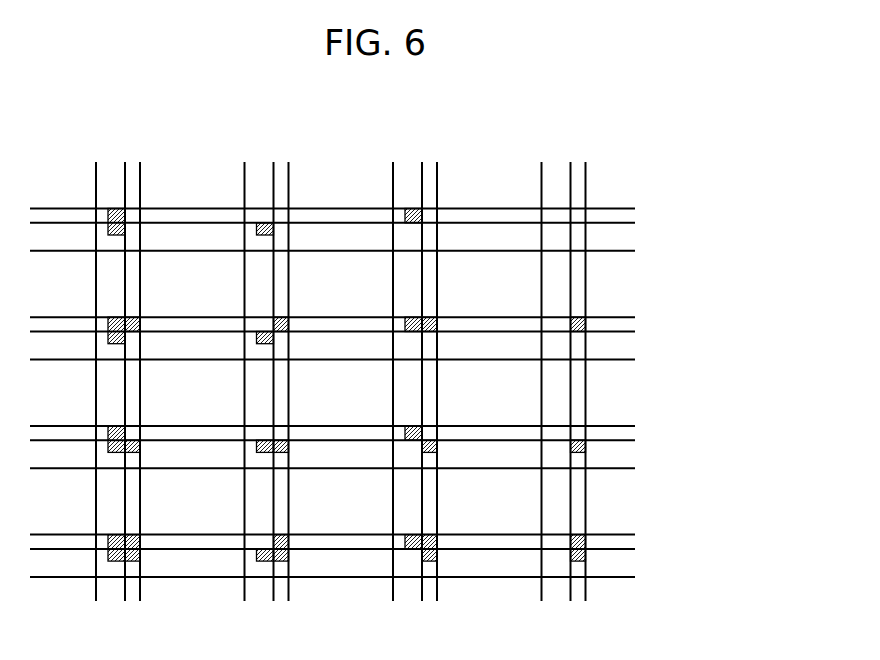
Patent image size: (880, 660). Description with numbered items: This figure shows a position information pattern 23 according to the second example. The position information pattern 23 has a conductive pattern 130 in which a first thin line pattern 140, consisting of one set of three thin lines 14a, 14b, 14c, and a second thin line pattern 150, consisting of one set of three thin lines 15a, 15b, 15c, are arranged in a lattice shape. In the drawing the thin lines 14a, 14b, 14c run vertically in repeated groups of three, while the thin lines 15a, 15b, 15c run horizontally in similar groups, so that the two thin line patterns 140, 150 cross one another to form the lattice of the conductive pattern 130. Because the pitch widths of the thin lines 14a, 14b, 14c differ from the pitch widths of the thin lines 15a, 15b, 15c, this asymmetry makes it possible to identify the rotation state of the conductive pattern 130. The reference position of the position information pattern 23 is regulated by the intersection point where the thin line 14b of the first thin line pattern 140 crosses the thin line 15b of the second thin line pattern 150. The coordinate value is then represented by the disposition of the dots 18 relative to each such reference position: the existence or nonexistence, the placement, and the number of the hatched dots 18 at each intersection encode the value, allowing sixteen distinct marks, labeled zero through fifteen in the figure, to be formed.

The position information pattern 23 is at (661, 149).
The first thin line pattern 140 is at (515, 63).
The thin line 14a is at (586, 163).
The thin line 14b is at (571, 163).
The thin line 14c is at (542, 163).
The second thin line pattern 150 is at (720, 177).
The thin line 15a is at (636, 208).
The thin line 15b is at (636, 223).
The thin line 15c is at (636, 251).
The conductive pattern 130 is at (592, 262).
The dots 18 is at (578, 331).